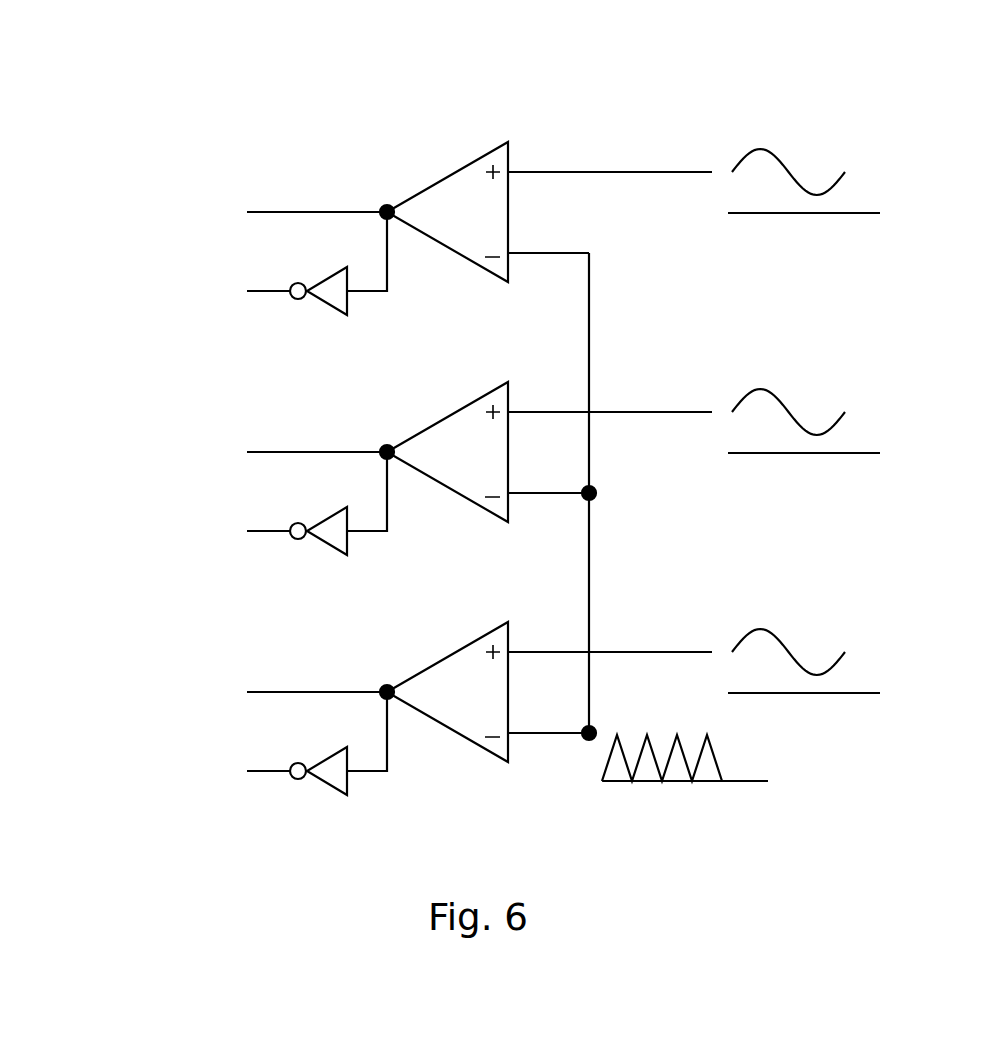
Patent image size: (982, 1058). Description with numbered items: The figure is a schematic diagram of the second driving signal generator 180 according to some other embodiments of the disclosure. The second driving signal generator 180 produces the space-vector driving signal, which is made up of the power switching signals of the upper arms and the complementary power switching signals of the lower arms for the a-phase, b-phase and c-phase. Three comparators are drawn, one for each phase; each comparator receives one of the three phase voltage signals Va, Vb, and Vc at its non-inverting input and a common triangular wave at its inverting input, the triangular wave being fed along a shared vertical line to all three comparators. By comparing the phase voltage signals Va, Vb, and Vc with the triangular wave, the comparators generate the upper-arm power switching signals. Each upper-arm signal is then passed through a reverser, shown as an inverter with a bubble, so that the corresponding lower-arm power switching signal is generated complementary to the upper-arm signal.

The second driving signal generator 180 is at (943, 61).
The phase voltage signal (a-phase) Va is at (804, 160).
The phase voltage signal (b-phase) Vb is at (804, 400).
The phase voltage signal (c-phase) Vc is at (804, 640).